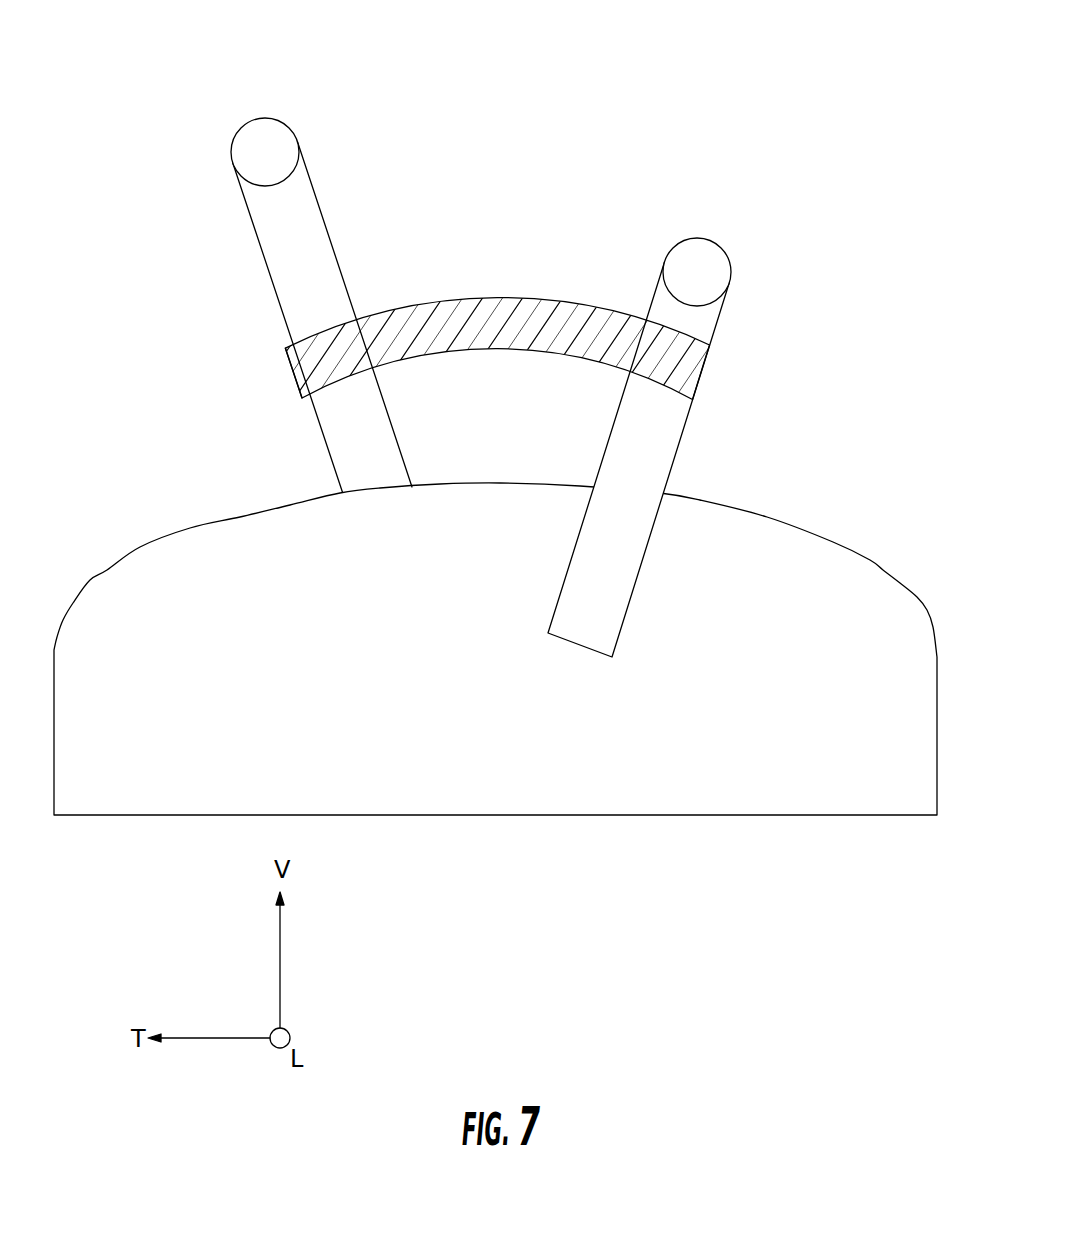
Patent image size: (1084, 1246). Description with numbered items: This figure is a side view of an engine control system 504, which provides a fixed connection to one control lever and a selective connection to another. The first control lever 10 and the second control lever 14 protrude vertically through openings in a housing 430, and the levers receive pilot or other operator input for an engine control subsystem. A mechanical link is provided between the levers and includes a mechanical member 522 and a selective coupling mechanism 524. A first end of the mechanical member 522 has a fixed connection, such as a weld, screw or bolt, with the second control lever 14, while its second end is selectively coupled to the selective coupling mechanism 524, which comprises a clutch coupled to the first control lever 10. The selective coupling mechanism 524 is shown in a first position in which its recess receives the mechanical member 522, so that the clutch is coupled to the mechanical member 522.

The first control lever 10 is at (200, 223).
The second control lever 14 is at (742, 323).
The engine control system 504 is at (630, 111).
The mechanical member 522 is at (487, 342).
The selective coupling mechanism 524 is at (280, 373).
The housing 430 is at (868, 578).